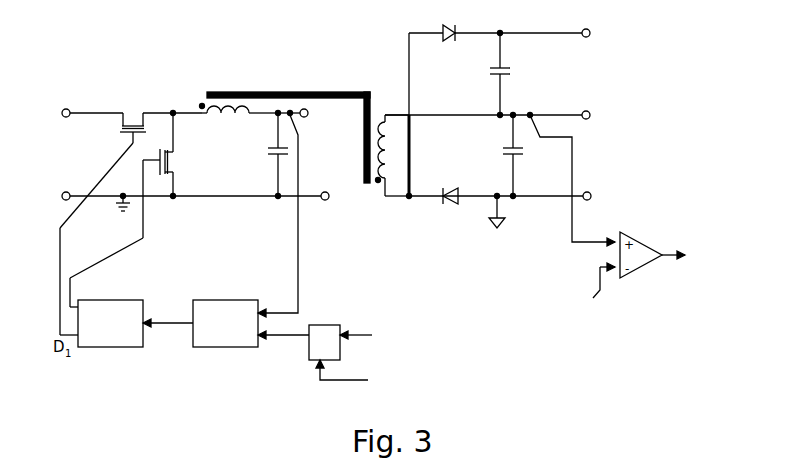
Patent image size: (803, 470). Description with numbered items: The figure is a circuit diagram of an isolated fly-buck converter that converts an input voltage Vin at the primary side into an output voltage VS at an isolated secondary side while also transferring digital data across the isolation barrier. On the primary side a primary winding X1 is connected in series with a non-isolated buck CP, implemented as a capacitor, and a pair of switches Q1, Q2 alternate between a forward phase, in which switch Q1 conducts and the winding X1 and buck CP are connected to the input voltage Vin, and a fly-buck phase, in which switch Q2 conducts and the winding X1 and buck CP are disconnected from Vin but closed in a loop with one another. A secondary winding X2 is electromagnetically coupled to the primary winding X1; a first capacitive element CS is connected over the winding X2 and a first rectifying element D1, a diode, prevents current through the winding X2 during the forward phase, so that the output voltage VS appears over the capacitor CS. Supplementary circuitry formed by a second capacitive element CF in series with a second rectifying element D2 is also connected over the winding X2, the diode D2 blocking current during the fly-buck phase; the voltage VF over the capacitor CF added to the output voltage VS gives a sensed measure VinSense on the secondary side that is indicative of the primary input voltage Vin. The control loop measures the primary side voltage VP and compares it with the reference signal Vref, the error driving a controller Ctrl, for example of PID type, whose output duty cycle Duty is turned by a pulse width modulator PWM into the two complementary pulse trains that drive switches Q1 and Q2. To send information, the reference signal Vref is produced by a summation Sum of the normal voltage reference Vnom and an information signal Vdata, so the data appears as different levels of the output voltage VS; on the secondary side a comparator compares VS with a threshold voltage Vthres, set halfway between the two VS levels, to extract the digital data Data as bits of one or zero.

The switch Q1 is at (133, 114).
The switch Q2 is at (170, 154).
The primary winding X1 is at (239, 123).
The secondary winding X2 is at (393, 155).
The non-isolated buck CP is at (270, 154).
The second capacitive element CF is at (486, 74).
The first capacitive element CS is at (500, 155).
The first rectifying element D1 is at (447, 208).
The second rectifying element D2 is at (453, 22).
The input voltage Vin is at (76, 115).
The primary side voltage VP is at (313, 119).
The output voltage VS is at (597, 121).
The voltage over the second capacitive element VF is at (524, 74).
The sensed measure VinSense is at (615, 41).
The threshold voltage Vthres is at (606, 305).
The normal voltage reference Vnom is at (365, 326).
The information signal Vdata is at (354, 370).
The reference signal Vref is at (283, 344).
The duty cycle Duty is at (168, 317).
The digital data Data is at (698, 240).
The pulse width modulator PWM is at (110, 323).
The controller Ctrl is at (225, 323).
The summation Sum is at (324, 342).